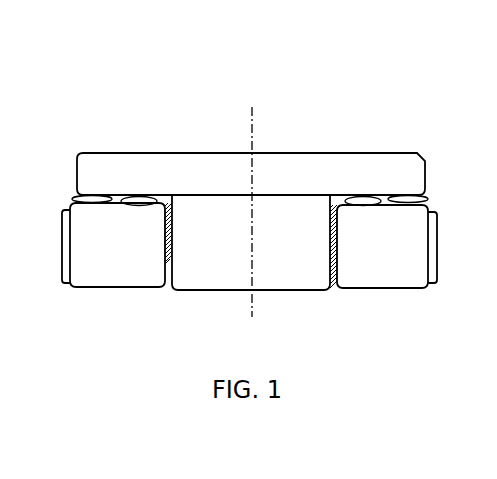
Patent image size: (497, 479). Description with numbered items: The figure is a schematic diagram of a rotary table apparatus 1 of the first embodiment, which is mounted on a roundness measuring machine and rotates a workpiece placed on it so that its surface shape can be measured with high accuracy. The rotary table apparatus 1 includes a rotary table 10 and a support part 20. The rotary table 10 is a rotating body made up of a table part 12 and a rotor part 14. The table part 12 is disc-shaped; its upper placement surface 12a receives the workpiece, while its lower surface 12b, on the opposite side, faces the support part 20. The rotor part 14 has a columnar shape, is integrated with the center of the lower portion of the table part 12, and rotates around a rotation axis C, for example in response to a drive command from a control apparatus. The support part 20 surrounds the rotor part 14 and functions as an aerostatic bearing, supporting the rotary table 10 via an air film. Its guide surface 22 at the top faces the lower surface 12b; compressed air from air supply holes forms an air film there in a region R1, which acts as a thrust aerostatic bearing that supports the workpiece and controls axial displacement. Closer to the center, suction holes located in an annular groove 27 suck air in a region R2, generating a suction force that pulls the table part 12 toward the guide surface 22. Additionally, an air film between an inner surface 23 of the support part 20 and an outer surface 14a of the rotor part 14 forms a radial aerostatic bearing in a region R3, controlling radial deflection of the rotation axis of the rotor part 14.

The rotary table apparatus 1 is at (249, 176).
The rotary table 10 is at (249, 212).
The table part 12 is at (251, 144).
The placement surface 12a is at (265, 123).
The lower surface 12b is at (340, 162).
The rotor part 14 is at (251, 263).
The outer surface 14a is at (387, 246).
The support part 20 is at (113, 266).
The guide surface 22 is at (250, 207).
The inner surface 23 is at (312, 246).
The annular groove 27 is at (251, 207).
The rotation axis C is at (269, 212).
The region R1 is at (250, 180).
The region R2 is at (251, 182).
The region R3 is at (251, 245).